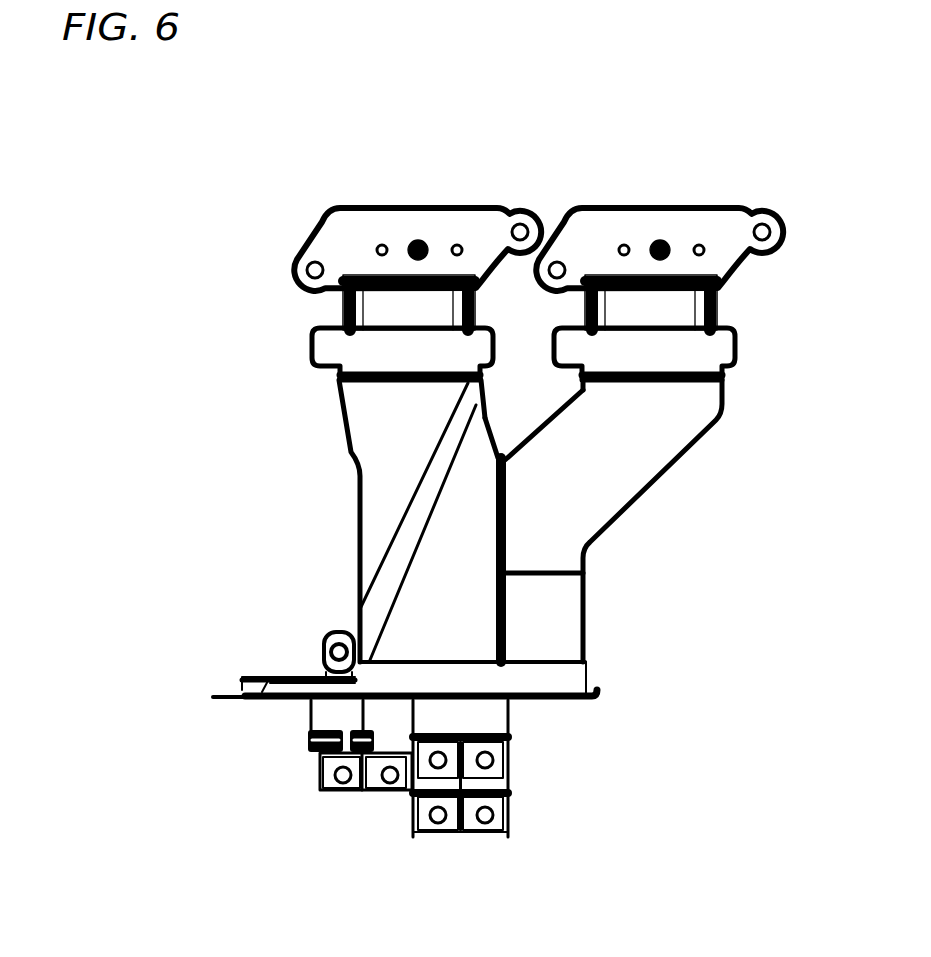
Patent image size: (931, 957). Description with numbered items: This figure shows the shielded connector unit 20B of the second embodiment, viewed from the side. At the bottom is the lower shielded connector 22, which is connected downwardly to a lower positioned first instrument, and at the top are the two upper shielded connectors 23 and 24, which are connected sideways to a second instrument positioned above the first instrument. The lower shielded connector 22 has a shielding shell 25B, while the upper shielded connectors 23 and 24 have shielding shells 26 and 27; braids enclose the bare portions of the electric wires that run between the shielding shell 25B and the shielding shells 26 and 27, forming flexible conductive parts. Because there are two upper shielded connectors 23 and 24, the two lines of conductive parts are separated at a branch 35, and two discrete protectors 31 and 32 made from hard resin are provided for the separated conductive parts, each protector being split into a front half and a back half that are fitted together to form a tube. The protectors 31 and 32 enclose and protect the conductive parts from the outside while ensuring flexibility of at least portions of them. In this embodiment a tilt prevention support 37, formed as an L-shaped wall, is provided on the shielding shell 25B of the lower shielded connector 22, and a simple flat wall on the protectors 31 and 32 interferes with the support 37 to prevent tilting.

The shielded connector unit 20B is at (726, 497).
The lower shielded connector 22 is at (566, 737).
The upper shielded connector 23 is at (658, 176).
The upper shielded connector 24 is at (418, 176).
The shielding shell 25B is at (598, 688).
The shielding shell 26 is at (700, 207).
The shielding shell 27 is at (388, 207).
The protector 31 is at (686, 417).
The protector 32 is at (368, 442).
The branch 35 is at (510, 428).
The tilt prevention support 37 is at (548, 672).